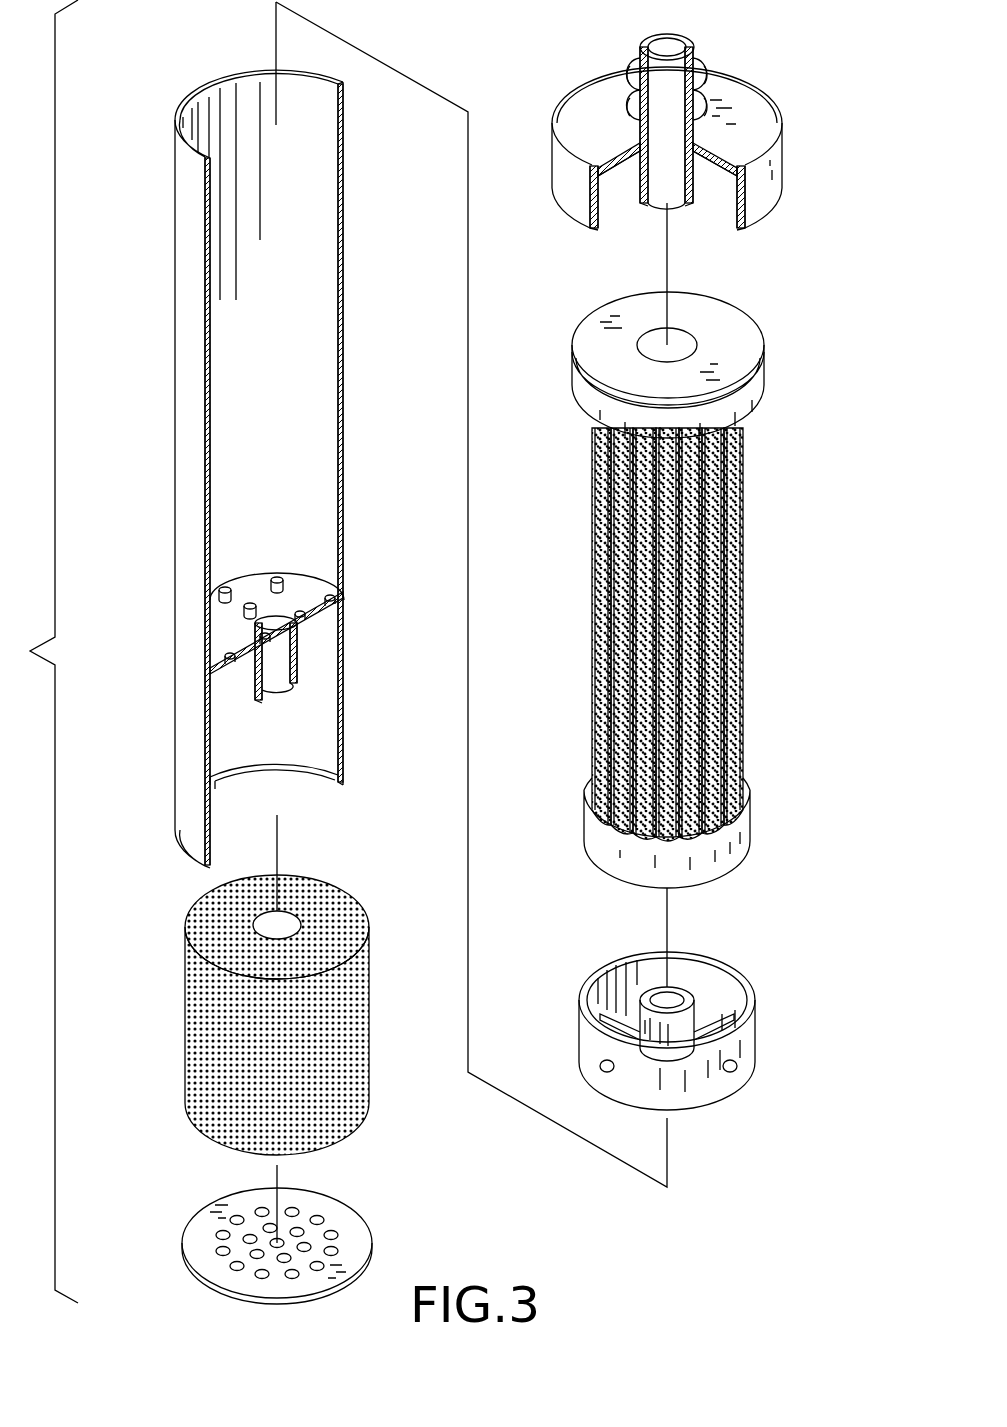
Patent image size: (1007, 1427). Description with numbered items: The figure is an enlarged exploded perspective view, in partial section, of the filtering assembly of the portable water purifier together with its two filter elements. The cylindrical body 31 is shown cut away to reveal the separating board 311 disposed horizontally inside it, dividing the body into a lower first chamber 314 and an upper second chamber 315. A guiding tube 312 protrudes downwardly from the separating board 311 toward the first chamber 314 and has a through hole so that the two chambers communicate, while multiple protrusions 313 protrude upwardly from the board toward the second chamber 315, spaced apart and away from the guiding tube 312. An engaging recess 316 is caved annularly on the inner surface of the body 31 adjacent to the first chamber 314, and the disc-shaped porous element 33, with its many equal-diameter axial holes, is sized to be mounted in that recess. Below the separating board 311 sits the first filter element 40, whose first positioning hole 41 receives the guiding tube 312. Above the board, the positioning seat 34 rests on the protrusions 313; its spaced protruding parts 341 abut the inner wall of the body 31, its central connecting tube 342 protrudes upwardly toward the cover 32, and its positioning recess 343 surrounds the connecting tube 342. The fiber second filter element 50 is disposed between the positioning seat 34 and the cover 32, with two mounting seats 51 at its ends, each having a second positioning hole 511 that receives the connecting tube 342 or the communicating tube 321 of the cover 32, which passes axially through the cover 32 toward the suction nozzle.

The body 31 is at (248, 469).
The separating board 311 is at (225, 614).
The guiding tube 312 is at (256, 680).
The protrusions 313 is at (224, 586).
The first chamber 314 is at (315, 742).
The second chamber 315 is at (302, 308).
The engaging recess 316 is at (322, 778).
The cover 32 is at (709, 124).
The communicating tube 321 is at (690, 48).
The porous element 33 is at (172, 1267).
The positioning seat 34 is at (719, 1015).
The protruding parts 341 is at (733, 1066).
The connecting tube 342 is at (685, 998).
The positioning recess 343 is at (725, 1000).
The first filter element 40 is at (253, 1002).
The first positioning hole 41 is at (288, 928).
The second filter element 50 is at (721, 579).
The mounting seats 51 is at (711, 579).
The second positioning hole 511 is at (683, 342).